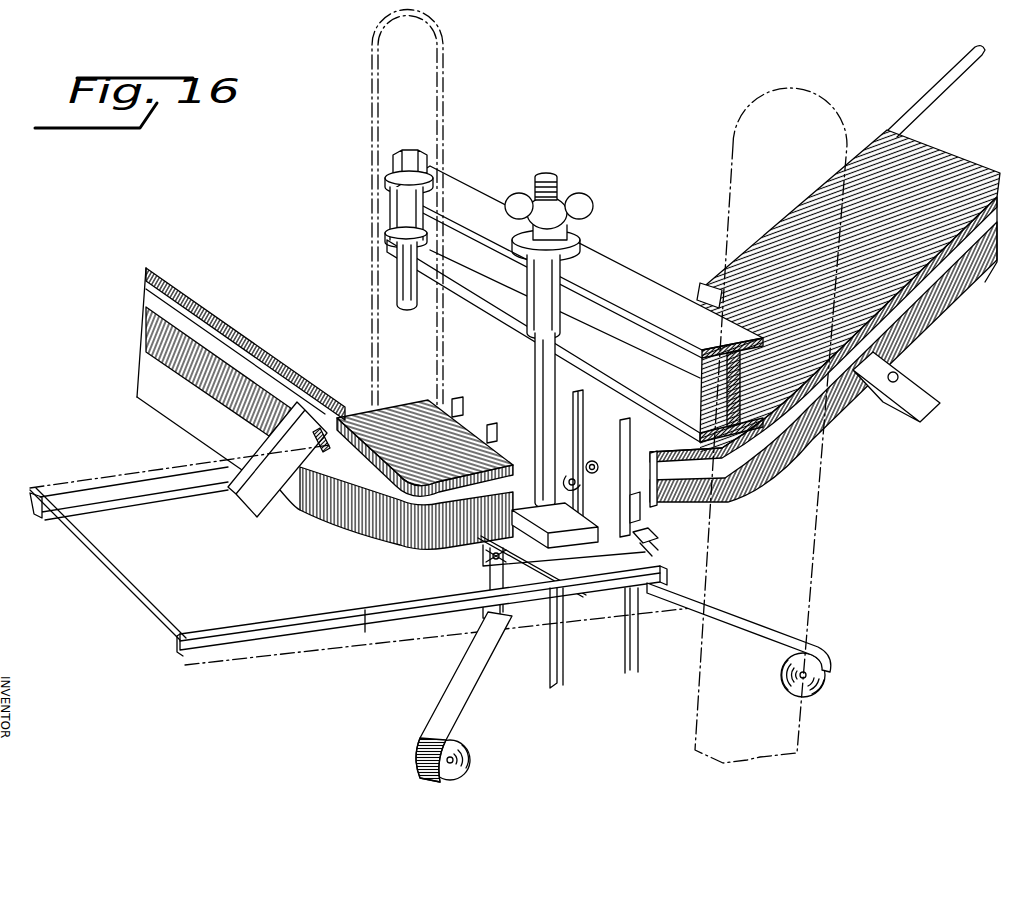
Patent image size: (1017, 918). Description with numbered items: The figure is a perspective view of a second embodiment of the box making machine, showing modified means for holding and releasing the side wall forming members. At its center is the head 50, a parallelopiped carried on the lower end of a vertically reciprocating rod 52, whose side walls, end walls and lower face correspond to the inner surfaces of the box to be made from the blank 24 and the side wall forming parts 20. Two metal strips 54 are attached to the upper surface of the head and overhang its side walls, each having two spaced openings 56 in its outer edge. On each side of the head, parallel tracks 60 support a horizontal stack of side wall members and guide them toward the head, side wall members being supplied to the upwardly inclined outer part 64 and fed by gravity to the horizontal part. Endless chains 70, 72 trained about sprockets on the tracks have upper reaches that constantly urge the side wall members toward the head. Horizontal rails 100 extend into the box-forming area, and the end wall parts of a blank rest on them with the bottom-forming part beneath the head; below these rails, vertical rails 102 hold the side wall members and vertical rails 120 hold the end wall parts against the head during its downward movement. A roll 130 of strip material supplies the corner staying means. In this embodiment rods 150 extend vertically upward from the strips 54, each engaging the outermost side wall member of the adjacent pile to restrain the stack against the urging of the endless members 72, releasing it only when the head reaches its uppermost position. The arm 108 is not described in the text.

The side wall forming part 20 is at (352, 403).
The blank 24 is at (148, 590).
The head 50 is at (561, 566).
The rod 52 is at (557, 183).
The metal strip 54 is at (612, 578).
The opening 56 is at (575, 483).
The track 60 is at (128, 378).
The upwardly inclined outer part 64 is at (160, 414).
The endless chain 70 is at (593, 461).
The endless chain 72 is at (635, 497).
The horizontal rail 100 is at (137, 504).
The vertical rail 102 is at (570, 490).
The arm 108 is at (686, 600).
The vertical rail 120 is at (628, 672).
The roll 130 is at (458, 762).
The rod 150 is at (490, 430).